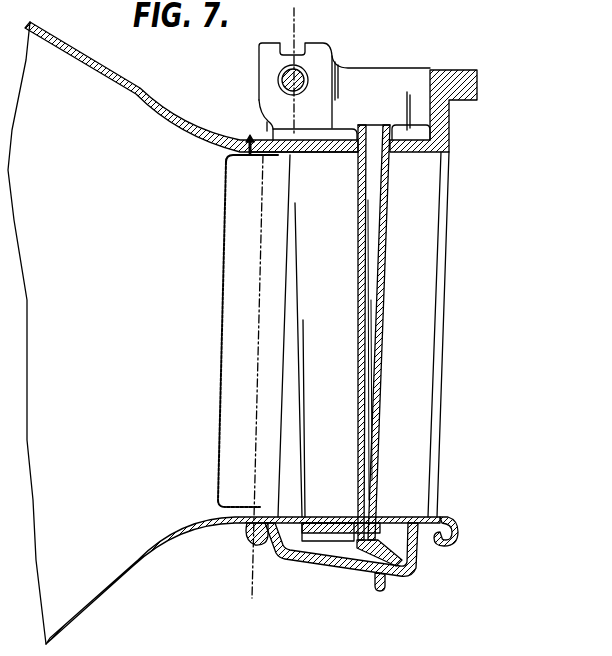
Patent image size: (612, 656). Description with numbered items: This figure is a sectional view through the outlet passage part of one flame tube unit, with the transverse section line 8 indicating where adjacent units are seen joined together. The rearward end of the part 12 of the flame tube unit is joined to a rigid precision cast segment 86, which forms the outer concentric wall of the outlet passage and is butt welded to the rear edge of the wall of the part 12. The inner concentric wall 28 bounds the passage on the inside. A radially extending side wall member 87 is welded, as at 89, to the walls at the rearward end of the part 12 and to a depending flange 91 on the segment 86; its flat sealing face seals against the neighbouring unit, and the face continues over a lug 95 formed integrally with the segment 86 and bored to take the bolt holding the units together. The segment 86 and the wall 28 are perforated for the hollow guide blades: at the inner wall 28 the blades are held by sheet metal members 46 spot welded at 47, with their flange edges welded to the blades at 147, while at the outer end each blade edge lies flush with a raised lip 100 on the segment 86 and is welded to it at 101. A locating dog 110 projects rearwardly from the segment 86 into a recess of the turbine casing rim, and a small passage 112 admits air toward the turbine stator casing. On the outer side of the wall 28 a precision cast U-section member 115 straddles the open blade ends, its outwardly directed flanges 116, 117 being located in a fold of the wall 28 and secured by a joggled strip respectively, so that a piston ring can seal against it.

The section line 8— 8 is at (316, 19).
The part of flame tube unit 12 is at (160, 530).
The inner concentric wall 28 is at (382, 520).
The sheet metal blade attachment member 46 is at (379, 301).
The spot weld 47 is at (326, 522).
The precision cast segment 86 is at (333, 158).
The radially extending side wall member 87 is at (242, 293).
The weld 89 is at (226, 233).
The depending flange 91 is at (267, 158).
The lug 95 is at (316, 55).
The raised lip 100 is at (339, 134).
The weld 101 is at (367, 127).
The locating dog 110 is at (478, 83).
The small passage 112 is at (447, 113).
The U-section member 115 is at (357, 574).
The outwardly directed flange 116 is at (459, 536).
The outwardly directed flange 117 is at (258, 547).
The weld 147 is at (401, 571).